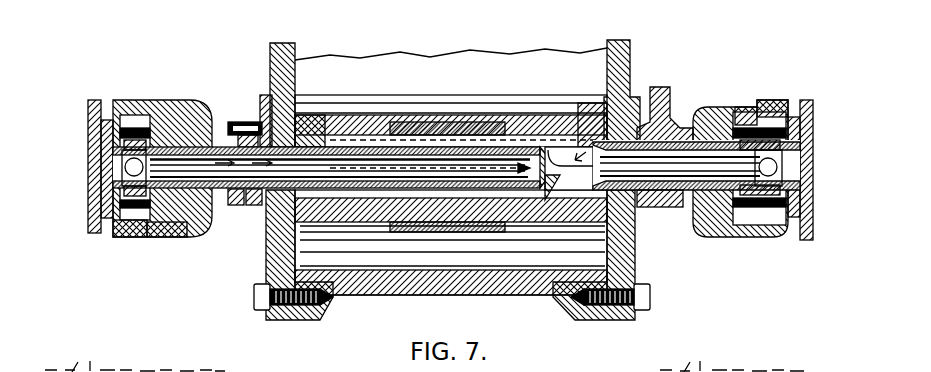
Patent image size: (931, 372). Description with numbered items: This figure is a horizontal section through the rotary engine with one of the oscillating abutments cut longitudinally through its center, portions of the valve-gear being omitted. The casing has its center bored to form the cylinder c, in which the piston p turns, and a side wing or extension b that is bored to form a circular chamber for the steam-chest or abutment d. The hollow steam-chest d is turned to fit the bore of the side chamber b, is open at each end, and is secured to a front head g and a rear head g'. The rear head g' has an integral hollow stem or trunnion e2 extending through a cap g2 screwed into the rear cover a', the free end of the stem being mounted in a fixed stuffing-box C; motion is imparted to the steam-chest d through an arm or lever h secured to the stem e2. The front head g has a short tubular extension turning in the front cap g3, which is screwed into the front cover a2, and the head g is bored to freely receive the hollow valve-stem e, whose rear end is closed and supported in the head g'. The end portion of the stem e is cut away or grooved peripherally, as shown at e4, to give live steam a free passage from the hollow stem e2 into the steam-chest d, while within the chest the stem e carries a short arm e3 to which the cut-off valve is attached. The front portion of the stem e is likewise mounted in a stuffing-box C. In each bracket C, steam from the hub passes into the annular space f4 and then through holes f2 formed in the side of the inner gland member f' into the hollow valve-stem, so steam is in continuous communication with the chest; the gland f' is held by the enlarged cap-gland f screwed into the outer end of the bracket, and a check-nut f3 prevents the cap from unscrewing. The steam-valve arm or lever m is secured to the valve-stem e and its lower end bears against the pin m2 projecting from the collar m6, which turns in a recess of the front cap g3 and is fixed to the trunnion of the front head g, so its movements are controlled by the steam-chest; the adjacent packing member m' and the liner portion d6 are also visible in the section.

The cap-gland f is at (443, 162).
The inner gland member f' is at (444, 168).
The holes f2 is at (120, 180).
The check-nut f3 is at (120, 237).
The annular space f4 is at (148, 237).
The stuffing-box C is at (450, 156).
The hollow valve-stem e is at (218, 147).
The hollow stem or trunnion e2 is at (648, 196).
The short arm e3 is at (446, 135).
The peripheral groove e4 is at (566, 152).
The steam-valve arm or lever m is at (228, 207).
The packing ring m' is at (251, 208).
The pin m2 is at (246, 126).
The collar m6 is at (262, 110).
The rear head or cover a' is at (608, 255).
The front head or cover a2 is at (268, 258).
The side wing or extension b is at (382, 297).
The cylinder c is at (451, 165).
The steam-chest or abutment d is at (353, 125).
The cylinder liner d6 is at (500, 122).
The front head g is at (310, 108).
The rear head g' is at (590, 108).
The cap g2 is at (628, 95).
The front cap g3 is at (272, 80).
The arm or lever h is at (660, 88).
The piston p is at (400, 60).